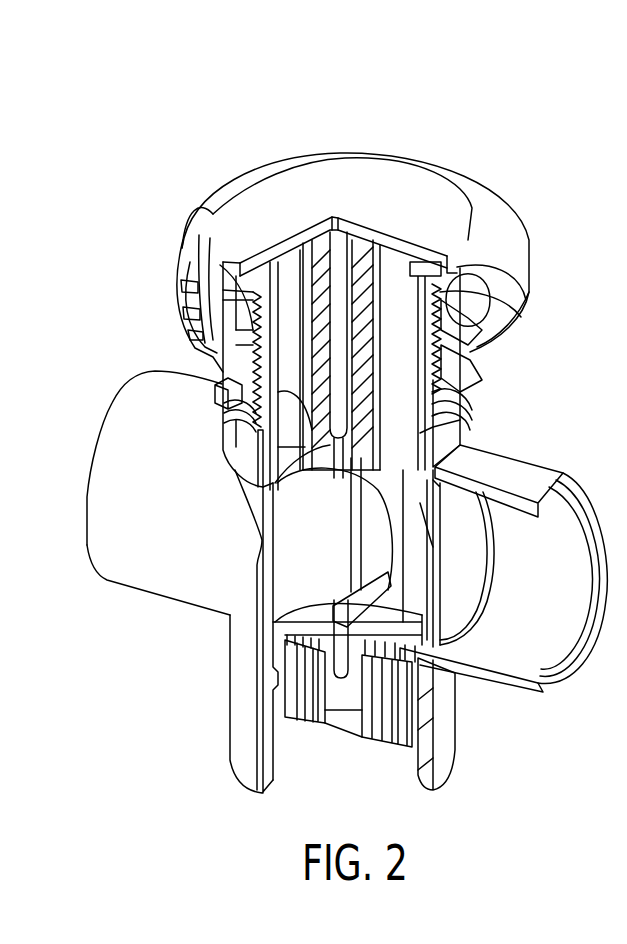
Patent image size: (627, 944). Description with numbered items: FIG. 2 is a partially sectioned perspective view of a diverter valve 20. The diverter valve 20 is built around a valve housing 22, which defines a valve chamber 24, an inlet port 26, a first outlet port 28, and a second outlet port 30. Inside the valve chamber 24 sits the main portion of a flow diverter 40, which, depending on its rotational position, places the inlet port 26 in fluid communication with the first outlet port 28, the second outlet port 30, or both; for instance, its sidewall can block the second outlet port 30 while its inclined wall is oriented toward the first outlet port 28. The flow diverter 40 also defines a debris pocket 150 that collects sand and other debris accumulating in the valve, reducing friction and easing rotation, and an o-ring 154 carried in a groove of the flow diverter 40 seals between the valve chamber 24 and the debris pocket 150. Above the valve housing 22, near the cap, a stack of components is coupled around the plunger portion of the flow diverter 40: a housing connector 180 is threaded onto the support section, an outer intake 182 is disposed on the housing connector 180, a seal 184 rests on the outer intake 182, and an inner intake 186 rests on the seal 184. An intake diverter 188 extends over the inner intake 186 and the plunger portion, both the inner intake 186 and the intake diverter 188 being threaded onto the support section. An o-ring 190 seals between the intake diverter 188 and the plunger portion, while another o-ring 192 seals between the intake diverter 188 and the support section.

The diverter valve 20 is at (554, 149).
The debris pocket 150 is at (528, 232).
The second outlet port 30 is at (82, 447).
The flow diverter 40 is at (218, 410).
The seal 184 is at (277, 272).
The o-ring 190 is at (326, 232).
The intake diverter 188 is at (392, 252).
The o-ring 192 is at (424, 285).
The inner intake 186 is at (474, 328).
The outer intake 182 is at (488, 363).
The housing connector 180 is at (476, 392).
The o-ring 154 is at (435, 532).
The first outlet port 28 is at (555, 612).
The valve chamber 24 is at (293, 593).
The inlet port 26 is at (331, 786).
The valve housing 22 is at (456, 748).